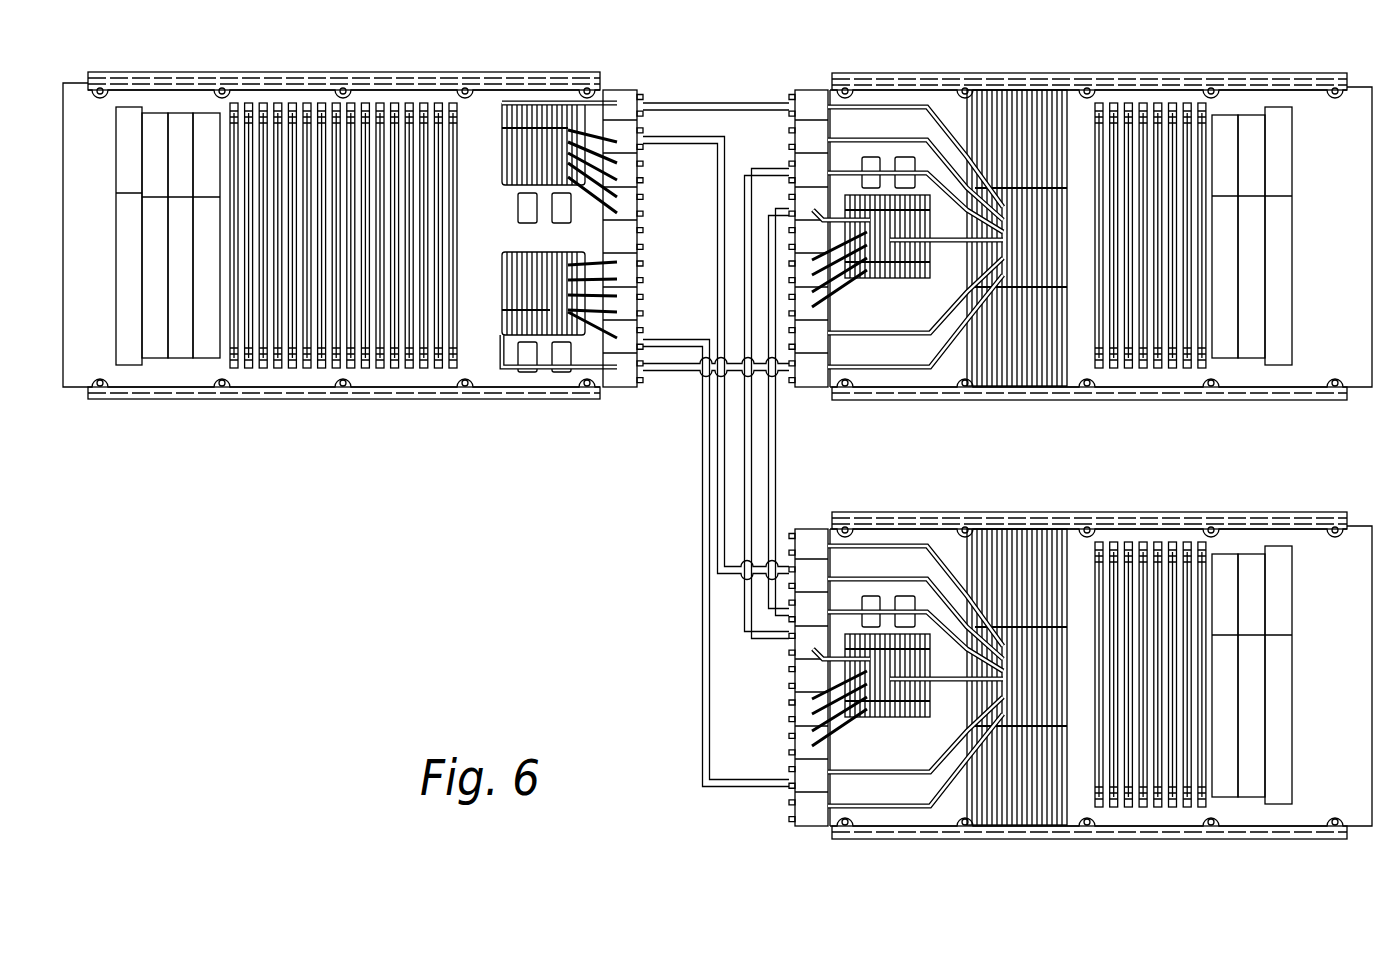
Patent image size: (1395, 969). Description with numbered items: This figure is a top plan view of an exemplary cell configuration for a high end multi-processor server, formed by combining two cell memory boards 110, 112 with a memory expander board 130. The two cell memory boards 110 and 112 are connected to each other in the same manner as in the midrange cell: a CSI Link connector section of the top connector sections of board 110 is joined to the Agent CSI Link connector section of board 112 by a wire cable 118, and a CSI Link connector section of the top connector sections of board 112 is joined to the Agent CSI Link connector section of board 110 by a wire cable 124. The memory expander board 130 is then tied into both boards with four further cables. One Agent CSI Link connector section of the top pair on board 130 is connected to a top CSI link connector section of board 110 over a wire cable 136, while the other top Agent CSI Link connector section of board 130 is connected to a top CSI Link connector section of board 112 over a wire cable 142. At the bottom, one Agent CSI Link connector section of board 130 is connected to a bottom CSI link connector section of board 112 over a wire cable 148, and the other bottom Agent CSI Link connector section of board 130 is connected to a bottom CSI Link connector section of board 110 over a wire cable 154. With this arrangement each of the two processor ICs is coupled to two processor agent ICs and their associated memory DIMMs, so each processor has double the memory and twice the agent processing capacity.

The cell memory board 110 is at (1318, 113).
The cell memory board 112 is at (1312, 548).
The memory expander board 130 is at (83, 360).
The wire cable 136 is at (726, 103).
The wire cable 142 is at (668, 142).
The wire cable 154 is at (668, 372).
The wire cable 148 is at (703, 605).
The wire cable 124 is at (772, 475).
The wire cable 118 is at (768, 640).